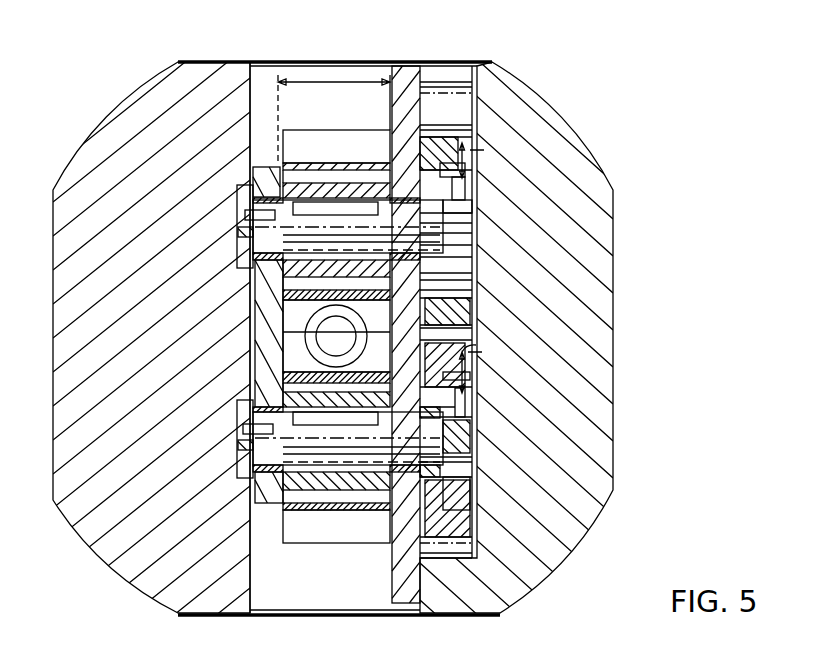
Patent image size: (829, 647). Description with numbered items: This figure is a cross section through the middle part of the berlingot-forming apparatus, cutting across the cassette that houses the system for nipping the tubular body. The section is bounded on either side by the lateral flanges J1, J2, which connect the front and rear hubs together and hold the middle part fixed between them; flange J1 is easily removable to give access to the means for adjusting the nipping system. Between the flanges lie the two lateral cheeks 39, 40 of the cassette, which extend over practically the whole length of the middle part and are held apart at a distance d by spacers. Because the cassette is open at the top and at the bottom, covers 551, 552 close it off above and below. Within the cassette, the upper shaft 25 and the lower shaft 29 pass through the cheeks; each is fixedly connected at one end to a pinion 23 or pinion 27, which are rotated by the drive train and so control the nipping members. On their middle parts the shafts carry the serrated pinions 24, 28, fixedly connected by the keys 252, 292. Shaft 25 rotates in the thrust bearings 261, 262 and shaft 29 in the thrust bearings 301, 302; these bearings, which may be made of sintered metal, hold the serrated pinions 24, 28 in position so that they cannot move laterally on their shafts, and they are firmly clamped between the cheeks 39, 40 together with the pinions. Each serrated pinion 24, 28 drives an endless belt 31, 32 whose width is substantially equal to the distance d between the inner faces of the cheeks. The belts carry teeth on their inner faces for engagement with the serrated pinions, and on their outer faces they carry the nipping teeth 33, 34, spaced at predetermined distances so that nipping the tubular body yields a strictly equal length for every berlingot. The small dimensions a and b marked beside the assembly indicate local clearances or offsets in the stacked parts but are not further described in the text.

The pinion 23 is at (440, 143).
The serrated pinion 24 is at (237, 258).
The shaft 25 is at (263, 233).
The key 252 is at (382, 205).
The thrust bearing 261 is at (250, 193).
The thrust bearing 262 is at (427, 197).
The pinion 27 is at (545, 547).
The serrated pinion 28 is at (327, 480).
The shaft 29 is at (270, 428).
The key 292 is at (362, 420).
The thrust bearing 301 is at (275, 485).
The thrust bearing 302 is at (480, 480).
The endless belt 31 is at (317, 160).
The endless belt 32 is at (298, 510).
The teeth 33 is at (295, 315).
The teeth 34 is at (295, 357).
The lateral cheek 39 is at (250, 165).
The lateral cheek 40 is at (398, 64).
The cover 551 is at (207, 60).
The cover 552 is at (207, 612).
The lateral flange J1 is at (117, 567).
The lateral flange J2 is at (552, 565).
The dimension a is at (478, 159).
The dimension b is at (477, 369).
The distance d is at (334, 119).